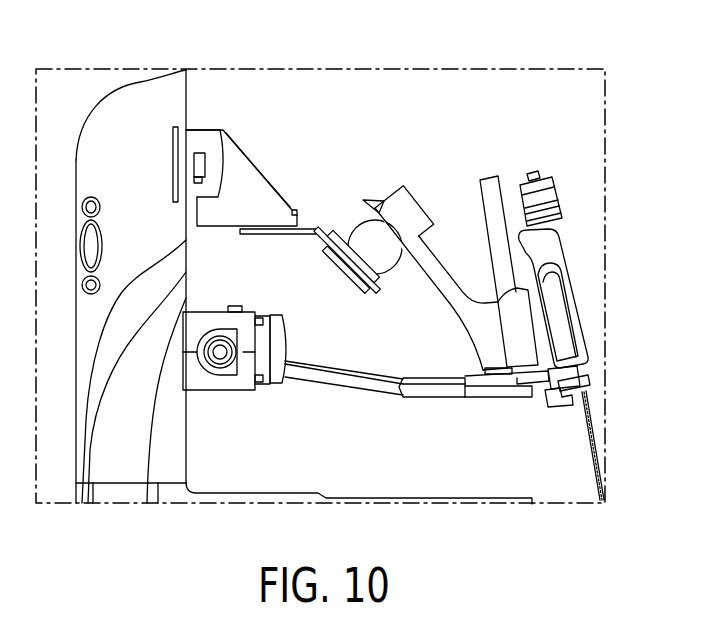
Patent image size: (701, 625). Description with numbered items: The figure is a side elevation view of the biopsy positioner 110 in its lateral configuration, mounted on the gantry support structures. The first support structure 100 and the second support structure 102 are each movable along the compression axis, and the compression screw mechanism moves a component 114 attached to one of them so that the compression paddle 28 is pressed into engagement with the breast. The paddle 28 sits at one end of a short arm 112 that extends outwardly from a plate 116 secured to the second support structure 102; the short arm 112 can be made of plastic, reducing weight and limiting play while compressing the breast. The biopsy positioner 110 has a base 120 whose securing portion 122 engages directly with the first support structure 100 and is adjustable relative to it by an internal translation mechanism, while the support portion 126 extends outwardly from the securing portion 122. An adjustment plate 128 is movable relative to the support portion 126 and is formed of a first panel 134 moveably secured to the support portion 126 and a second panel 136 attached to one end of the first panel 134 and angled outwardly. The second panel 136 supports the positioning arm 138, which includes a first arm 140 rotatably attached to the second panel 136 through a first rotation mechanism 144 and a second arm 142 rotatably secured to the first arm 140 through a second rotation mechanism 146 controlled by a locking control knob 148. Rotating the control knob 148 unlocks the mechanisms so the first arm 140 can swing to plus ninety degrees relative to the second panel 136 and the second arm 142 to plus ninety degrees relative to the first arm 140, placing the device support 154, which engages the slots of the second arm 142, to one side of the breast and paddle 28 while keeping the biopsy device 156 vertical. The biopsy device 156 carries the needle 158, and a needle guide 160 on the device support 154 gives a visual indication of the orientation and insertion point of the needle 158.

The compression paddle 28 is at (476, 397).
The first support structure 100 is at (228, 392).
The second support structure 102 is at (174, 162).
The biopsy positioner 110 is at (178, 101).
The arm 112 is at (388, 386).
The component 114 is at (322, 410).
The plate 116 is at (280, 385).
The base 120 is at (240, 142).
The securing portion 122 is at (204, 142).
The support portion 126 is at (256, 190).
The adjustment plate 128 is at (313, 243).
The first panel 134 is at (258, 234).
The second panel 136 is at (342, 260).
The positioning arm 138 is at (447, 250).
The first arm 140 is at (358, 234).
The second arm 142 is at (458, 302).
The first rotation mechanism 144 is at (378, 198).
The second rotation mechanism 146 is at (378, 293).
The control knob 148 is at (409, 187).
The device support 154 is at (490, 175).
The biopsy device 156 is at (556, 192).
The needle 158 is at (592, 416).
The needle guide 160 is at (562, 404).